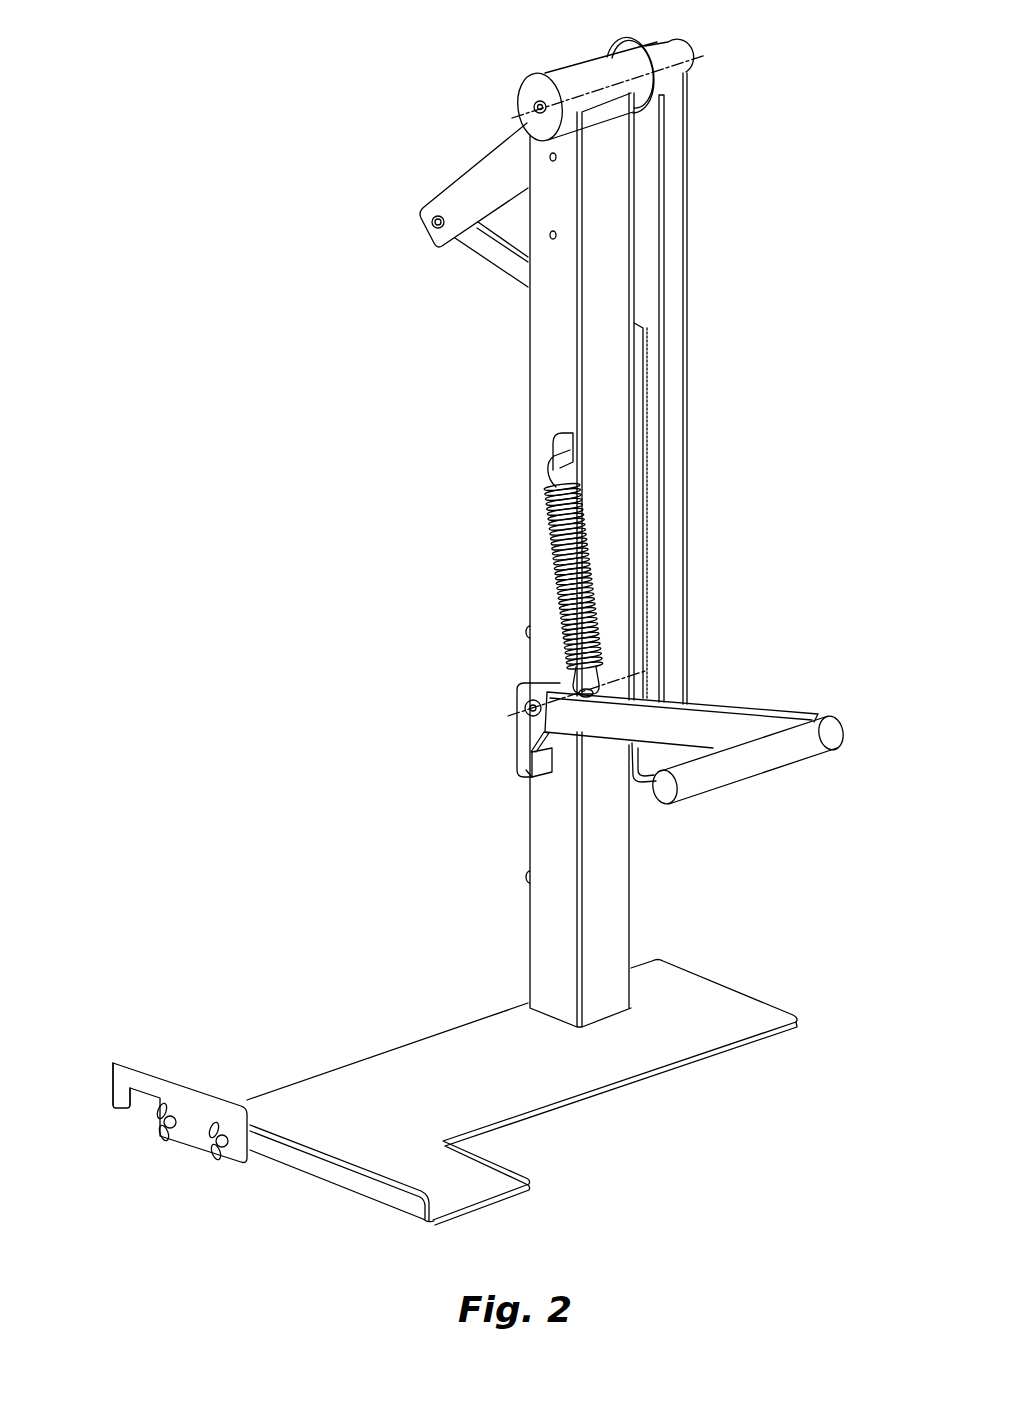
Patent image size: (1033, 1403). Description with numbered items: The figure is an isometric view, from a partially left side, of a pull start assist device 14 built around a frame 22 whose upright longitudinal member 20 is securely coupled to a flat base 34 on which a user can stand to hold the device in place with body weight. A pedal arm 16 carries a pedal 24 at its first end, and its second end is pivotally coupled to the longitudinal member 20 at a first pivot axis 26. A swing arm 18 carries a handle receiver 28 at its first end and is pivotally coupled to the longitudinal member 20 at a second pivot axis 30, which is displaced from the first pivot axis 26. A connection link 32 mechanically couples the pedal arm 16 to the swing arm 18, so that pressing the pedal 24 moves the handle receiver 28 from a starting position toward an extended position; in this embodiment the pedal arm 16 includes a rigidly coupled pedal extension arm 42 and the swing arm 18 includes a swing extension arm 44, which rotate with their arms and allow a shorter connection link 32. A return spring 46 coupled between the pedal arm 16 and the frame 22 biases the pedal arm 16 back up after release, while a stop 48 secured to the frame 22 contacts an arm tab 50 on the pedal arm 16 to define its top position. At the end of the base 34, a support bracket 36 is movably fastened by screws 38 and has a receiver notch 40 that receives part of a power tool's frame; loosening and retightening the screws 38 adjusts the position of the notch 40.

The pull start assist device 14 is at (320, 395).
The pedal arm 16 is at (757, 665).
The swing arm 18 is at (700, 395).
The longitudinal member 20 is at (552, 410).
The frame 22 is at (445, 787).
The pedal 24 is at (740, 772).
The first pivot axis 26 is at (508, 715).
The handle receiver 28 is at (648, 792).
The second pivot axis 30 is at (697, 55).
The connection link 32 is at (507, 257).
The base 34 is at (443, 1055).
The support bracket 36 is at (180, 1060).
The screws 38 is at (215, 1175).
The receiver notch 40 is at (135, 1128).
The pedal extension arm 42 is at (640, 533).
The swing extension arm 44 is at (465, 195).
The return spring 46 is at (550, 573).
The stop 48 is at (530, 775).
The arm tab 50 is at (522, 782).